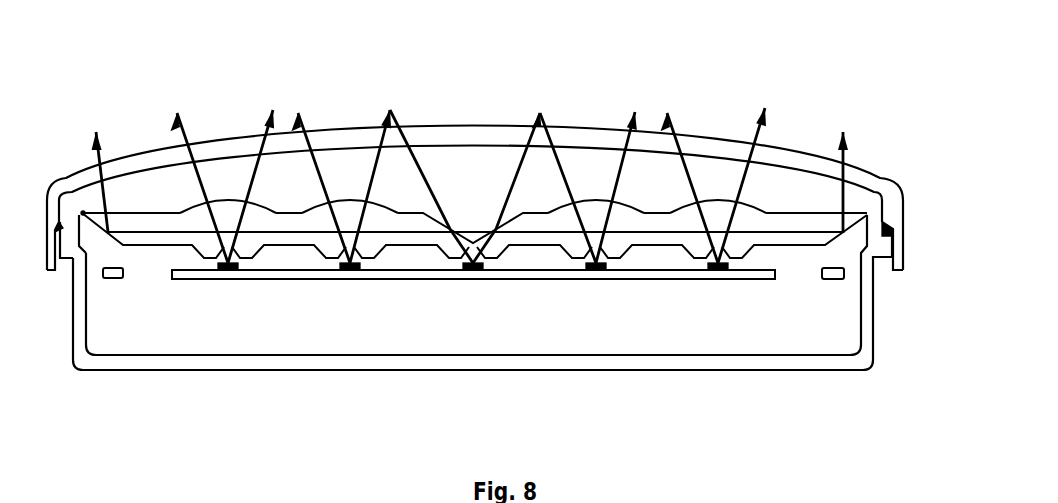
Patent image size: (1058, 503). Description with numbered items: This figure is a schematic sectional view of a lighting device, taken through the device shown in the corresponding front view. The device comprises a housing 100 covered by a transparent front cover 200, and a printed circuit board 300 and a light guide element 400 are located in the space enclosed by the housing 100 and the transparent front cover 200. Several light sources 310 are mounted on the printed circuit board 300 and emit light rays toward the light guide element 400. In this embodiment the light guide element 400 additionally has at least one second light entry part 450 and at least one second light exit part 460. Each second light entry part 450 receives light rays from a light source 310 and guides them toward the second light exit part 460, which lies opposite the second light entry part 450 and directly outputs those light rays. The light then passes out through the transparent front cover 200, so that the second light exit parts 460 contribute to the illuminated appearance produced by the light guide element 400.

The housing 100 is at (798, 363).
The transparent front cover 200 is at (860, 183).
The printed circuit board 300 is at (760, 276).
The light source 310 is at (350, 273).
The light guide element 400 is at (447, 218).
The second light entry part 450 is at (207, 246).
The second light exit part 460 is at (195, 207).